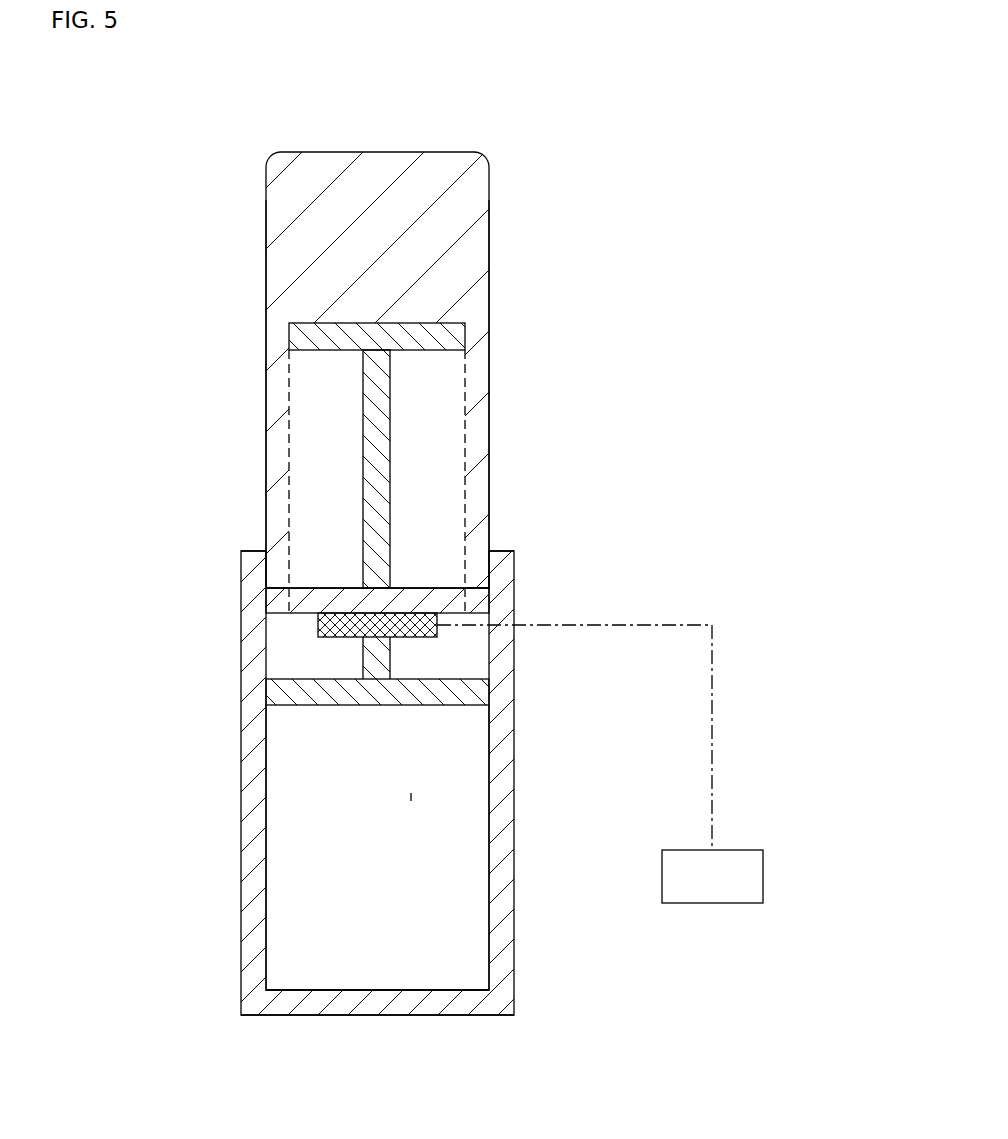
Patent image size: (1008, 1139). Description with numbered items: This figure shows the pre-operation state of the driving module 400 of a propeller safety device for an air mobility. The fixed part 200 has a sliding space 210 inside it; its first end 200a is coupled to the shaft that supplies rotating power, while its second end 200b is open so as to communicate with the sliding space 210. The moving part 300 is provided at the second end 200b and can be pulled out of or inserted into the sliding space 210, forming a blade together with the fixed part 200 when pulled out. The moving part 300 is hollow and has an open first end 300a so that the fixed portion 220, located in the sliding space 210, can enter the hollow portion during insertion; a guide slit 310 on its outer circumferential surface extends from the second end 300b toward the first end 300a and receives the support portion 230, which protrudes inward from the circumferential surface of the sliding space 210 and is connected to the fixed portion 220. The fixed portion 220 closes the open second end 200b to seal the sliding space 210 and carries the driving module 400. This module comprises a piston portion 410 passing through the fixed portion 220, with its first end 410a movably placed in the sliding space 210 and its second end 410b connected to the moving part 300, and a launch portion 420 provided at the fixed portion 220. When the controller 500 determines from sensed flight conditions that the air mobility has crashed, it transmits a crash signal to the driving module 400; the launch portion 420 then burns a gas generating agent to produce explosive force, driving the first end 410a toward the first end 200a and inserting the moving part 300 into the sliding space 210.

The fixed part 200 is at (514, 701).
The first end of the fixed part 200a is at (339, 1005).
The second end of the fixed part 200b is at (505, 566).
The sliding space 210 is at (411, 797).
The fixed portion 220 is at (418, 594).
The support portion 230 is at (480, 604).
The moving part 300 is at (470, 214).
The first end of the moving part 300a is at (490, 432).
The second end of the moving part 300b is at (302, 242).
The guide slit 310 is at (480, 373).
The driving module 400 is at (278, 532).
The piston portion 410 is at (372, 508).
The first end of the piston portion 410a is at (319, 697).
The second end of the piston portion 410b is at (300, 341).
The launch portion 420 is at (318, 625).
The controller 500 is at (752, 880).